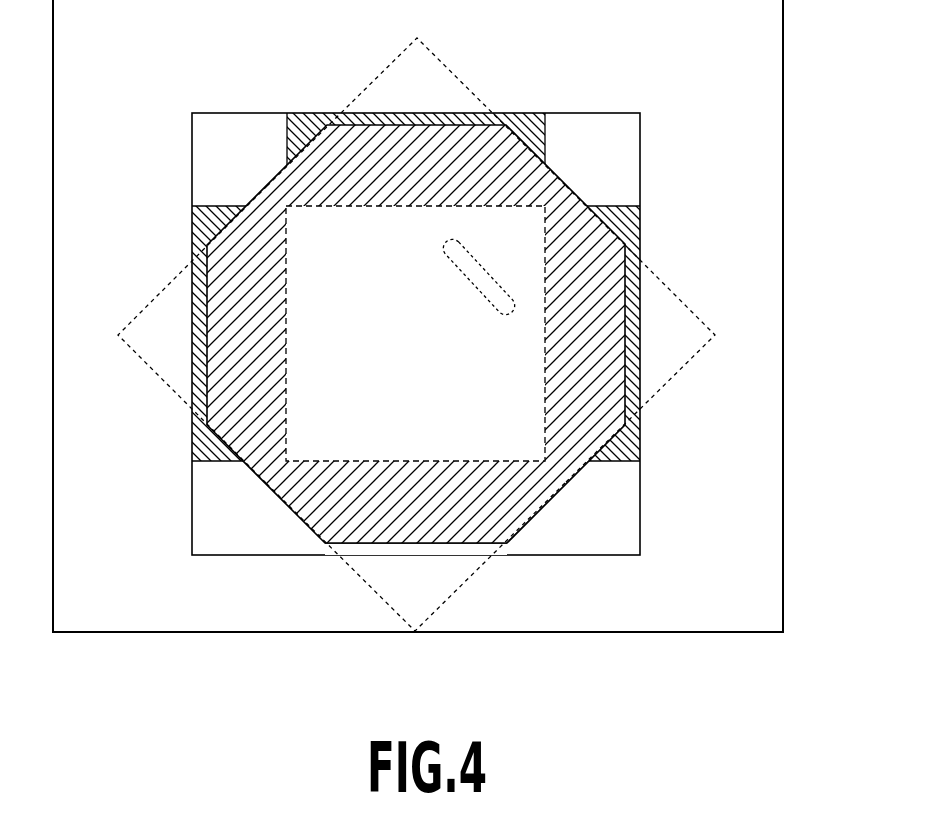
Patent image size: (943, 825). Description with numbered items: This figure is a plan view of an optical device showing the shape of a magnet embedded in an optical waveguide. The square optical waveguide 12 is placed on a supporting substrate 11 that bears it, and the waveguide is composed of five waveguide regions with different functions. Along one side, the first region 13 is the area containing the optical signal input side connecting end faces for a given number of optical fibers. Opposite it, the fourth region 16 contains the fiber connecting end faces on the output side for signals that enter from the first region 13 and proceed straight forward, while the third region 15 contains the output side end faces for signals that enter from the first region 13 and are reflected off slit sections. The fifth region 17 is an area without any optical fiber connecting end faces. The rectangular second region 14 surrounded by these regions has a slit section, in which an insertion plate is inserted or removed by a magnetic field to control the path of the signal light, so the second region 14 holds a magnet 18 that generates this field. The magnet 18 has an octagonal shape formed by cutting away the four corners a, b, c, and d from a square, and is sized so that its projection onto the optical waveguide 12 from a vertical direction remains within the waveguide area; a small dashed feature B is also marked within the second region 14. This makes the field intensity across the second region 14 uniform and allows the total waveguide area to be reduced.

The supporting substrate 11 is at (784, 104).
The optical waveguide 12 is at (625, 109).
The region 1 13 is at (192, 217).
The region 2 14 is at (485, 407).
The region 3 15 is at (302, 113).
The region 4 16 is at (640, 222).
The region 5 17 is at (575, 545).
The magnet 18 is at (610, 260).
The cut-away corner a is at (695, 350).
The cut-away corner b is at (393, 600).
The cut-away corner c is at (143, 343).
The cut-away corner d is at (440, 68).
The region B is at (478, 276).